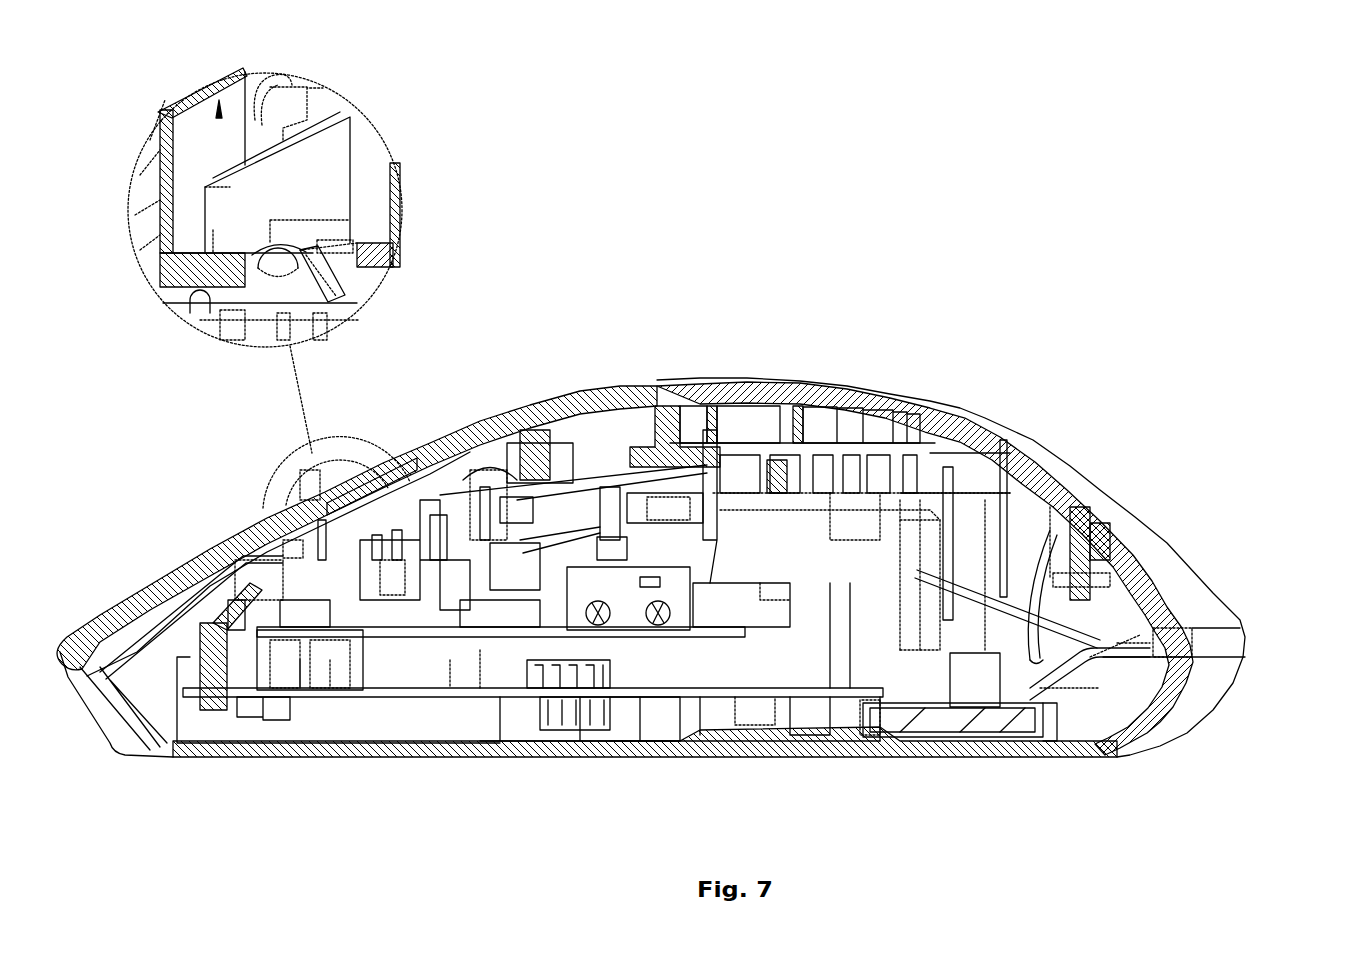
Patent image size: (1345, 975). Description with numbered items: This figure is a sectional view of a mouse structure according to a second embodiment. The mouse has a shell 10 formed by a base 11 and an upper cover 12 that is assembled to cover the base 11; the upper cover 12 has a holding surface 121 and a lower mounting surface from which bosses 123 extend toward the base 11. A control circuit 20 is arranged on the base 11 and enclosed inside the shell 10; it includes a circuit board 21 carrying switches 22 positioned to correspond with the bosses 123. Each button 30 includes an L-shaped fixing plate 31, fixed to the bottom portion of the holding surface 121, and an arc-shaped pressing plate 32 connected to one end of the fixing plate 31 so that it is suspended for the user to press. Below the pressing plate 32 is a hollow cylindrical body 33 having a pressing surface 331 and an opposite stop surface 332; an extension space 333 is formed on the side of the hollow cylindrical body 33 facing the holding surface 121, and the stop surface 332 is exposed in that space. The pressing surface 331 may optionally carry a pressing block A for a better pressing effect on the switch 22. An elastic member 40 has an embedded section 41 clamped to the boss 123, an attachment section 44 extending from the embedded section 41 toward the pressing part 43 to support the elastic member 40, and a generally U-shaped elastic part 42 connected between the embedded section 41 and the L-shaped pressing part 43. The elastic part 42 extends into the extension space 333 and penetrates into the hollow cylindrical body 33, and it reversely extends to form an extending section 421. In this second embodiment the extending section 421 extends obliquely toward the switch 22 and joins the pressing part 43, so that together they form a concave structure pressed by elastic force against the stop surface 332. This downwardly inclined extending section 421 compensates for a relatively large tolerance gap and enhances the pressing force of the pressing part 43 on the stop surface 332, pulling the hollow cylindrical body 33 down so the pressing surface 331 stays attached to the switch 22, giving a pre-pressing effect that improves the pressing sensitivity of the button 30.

The shell 10 is at (1303, 610).
The base 11 is at (1170, 733).
The upper cover 12 is at (1246, 614).
The holding surface 121 is at (1153, 557).
The boss 123 is at (327, 185).
The control circuit 20 is at (462, 812).
The circuit board 21 is at (447, 757).
The switch 22 is at (200, 310).
The button 30 is at (640, 248).
The fixing plate 31 is at (710, 385).
The pressing plate 32 is at (507, 417).
The hollow cylindrical body 33 is at (160, 152).
The pressing surface 331 is at (160, 268).
The stop surface 332 is at (178, 225).
The extension space 333 is at (220, 100).
The elastic member 40 is at (463, 283).
The embedded section 41 is at (385, 262).
The elastic part 42 is at (290, 262).
The extending section 421 is at (280, 272).
The pressing part 43 is at (322, 290).
The attachment section 44 is at (340, 253).
The pressing block A is at (160, 272).